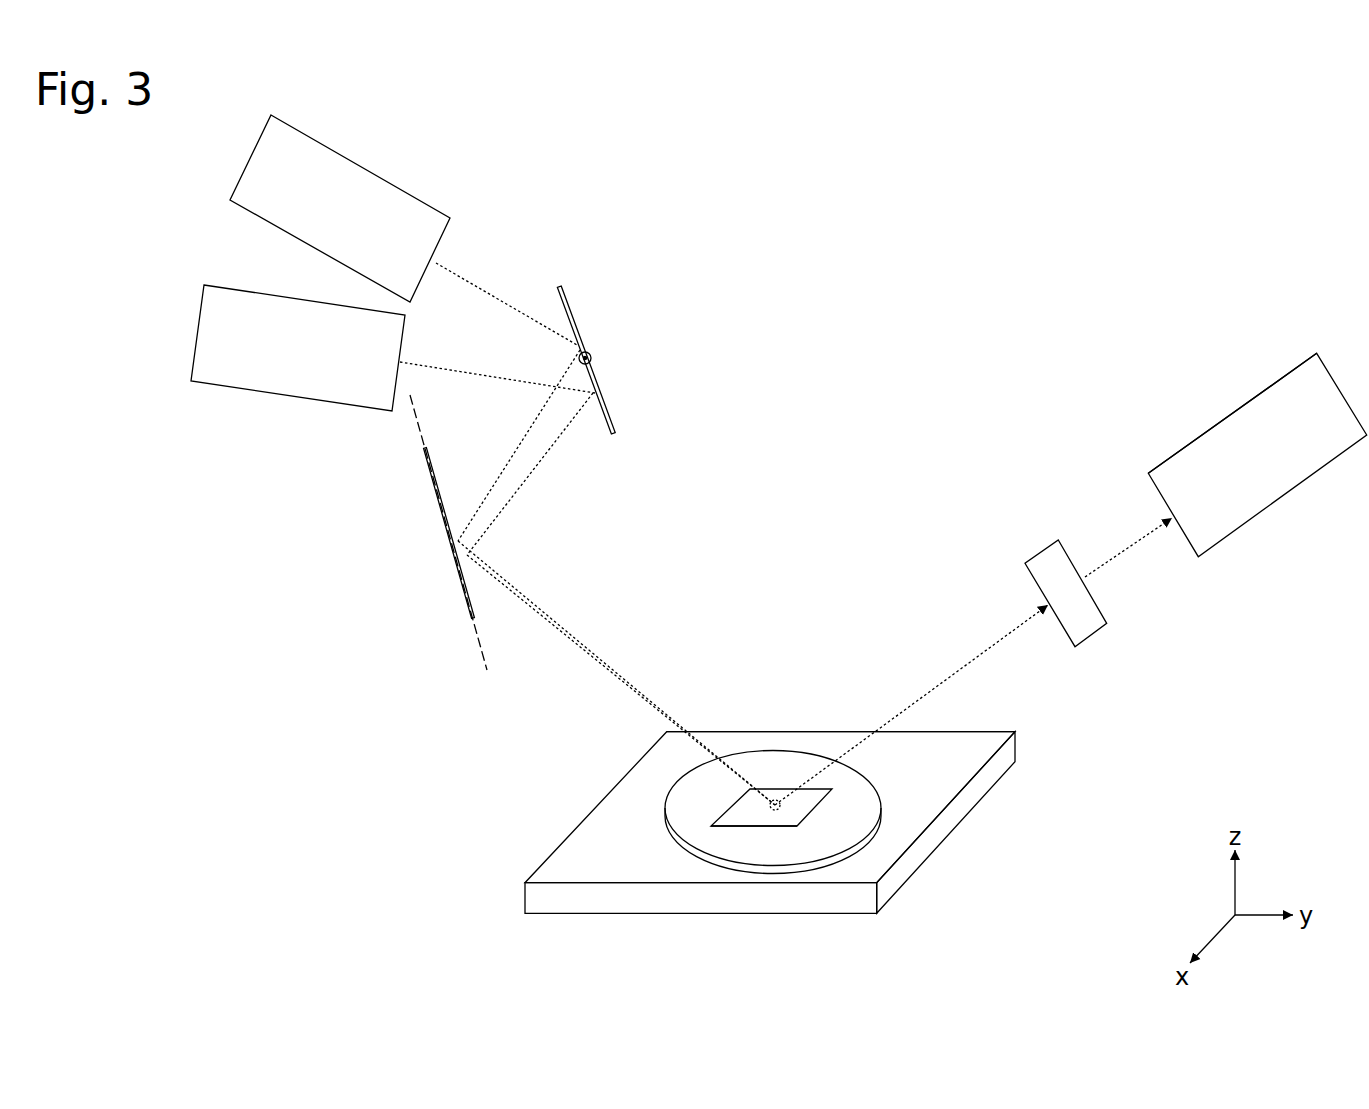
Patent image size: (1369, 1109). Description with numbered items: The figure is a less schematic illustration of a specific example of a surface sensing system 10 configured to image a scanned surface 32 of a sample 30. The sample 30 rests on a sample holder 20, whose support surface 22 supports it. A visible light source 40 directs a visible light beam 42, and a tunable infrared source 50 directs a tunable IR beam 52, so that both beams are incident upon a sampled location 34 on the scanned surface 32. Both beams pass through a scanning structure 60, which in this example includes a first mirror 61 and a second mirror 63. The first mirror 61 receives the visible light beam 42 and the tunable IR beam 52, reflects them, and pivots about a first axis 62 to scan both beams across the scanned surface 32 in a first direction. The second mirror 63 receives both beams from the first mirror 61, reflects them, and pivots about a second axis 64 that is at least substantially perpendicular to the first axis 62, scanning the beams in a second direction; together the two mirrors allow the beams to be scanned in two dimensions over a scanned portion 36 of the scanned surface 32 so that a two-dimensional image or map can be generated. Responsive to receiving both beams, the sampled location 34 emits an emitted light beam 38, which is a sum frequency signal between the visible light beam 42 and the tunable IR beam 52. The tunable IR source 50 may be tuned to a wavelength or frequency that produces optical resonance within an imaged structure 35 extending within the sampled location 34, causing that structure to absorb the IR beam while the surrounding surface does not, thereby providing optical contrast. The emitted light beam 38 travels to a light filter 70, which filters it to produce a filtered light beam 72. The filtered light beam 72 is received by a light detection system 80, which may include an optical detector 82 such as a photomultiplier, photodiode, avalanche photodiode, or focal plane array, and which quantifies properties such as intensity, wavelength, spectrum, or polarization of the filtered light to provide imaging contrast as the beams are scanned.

The surface sensing system 10 is at (1270, 123).
The sample holder 20 is at (882, 912).
The support surface 22 is at (973, 743).
The sample 30 is at (887, 812).
The scanned surface 32 is at (857, 792).
The sampled location 34 is at (780, 818).
The imaged structure 35 is at (768, 808).
The scanned portion 36 is at (750, 827).
The emitted light beam 38 is at (968, 657).
The visible light source 40 is at (273, 393).
The visible light beam 42 is at (473, 377).
The tunable infrared source 50 is at (388, 182).
The tunable IR beam 52 is at (486, 292).
The scanning structure 60 is at (568, 531).
The first mirror 61 is at (568, 308).
The first axis 62 is at (592, 355).
The second mirror 63 is at (432, 483).
The second axis 64 is at (475, 638).
The light filter 70 is at (1043, 552).
The filtered light beam 72 is at (1127, 547).
The light detection system 80 is at (1220, 422).
The optical detector 82 is at (1308, 413).